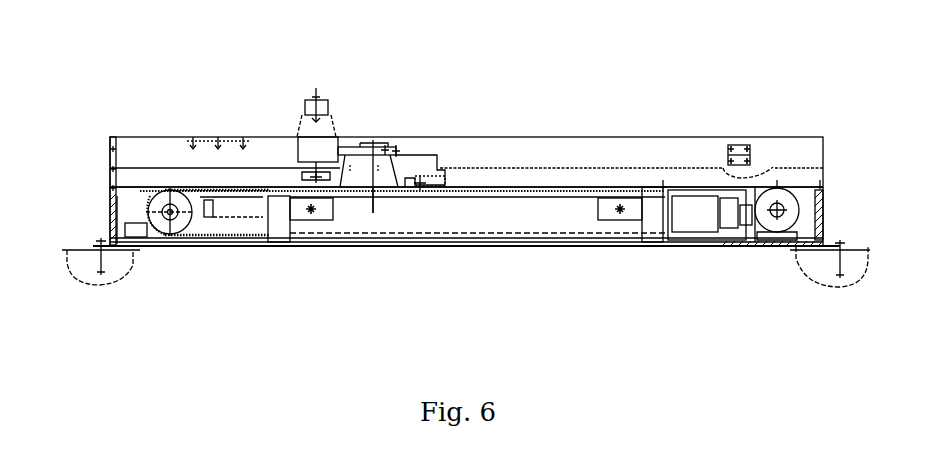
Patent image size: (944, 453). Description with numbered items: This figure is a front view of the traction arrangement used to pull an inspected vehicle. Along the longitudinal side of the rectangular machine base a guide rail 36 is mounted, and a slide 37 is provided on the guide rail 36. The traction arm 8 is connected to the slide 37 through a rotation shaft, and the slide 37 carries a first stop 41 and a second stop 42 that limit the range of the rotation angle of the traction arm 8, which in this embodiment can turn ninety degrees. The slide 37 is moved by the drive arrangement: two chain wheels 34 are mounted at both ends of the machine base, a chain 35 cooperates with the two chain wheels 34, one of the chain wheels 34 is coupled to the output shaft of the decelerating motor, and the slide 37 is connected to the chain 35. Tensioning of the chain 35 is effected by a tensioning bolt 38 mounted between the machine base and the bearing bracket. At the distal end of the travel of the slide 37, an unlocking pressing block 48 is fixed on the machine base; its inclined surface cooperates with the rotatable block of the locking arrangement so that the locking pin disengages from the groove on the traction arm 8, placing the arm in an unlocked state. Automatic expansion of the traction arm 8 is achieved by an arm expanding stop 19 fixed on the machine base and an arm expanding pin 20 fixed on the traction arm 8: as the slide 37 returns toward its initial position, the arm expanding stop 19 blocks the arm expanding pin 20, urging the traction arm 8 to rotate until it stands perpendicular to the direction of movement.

The traction arm 8 is at (348, 147).
The arm expanding stop 19 is at (243, 140).
The arm expanding pin 20 is at (387, 140).
The chain wheels 34 is at (157, 250).
The chain 35 is at (193, 250).
The guide rail 36 is at (505, 177).
The slide 37 is at (387, 177).
The tensioning bolt 38 is at (110, 225).
The first stop 41 is at (400, 147).
The second stop 42 is at (420, 147).
The unlocking pressing block 48 is at (732, 147).